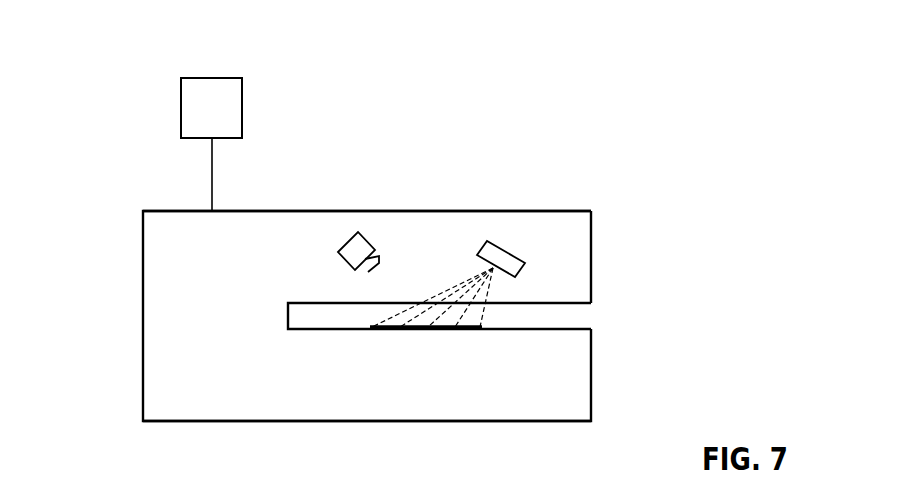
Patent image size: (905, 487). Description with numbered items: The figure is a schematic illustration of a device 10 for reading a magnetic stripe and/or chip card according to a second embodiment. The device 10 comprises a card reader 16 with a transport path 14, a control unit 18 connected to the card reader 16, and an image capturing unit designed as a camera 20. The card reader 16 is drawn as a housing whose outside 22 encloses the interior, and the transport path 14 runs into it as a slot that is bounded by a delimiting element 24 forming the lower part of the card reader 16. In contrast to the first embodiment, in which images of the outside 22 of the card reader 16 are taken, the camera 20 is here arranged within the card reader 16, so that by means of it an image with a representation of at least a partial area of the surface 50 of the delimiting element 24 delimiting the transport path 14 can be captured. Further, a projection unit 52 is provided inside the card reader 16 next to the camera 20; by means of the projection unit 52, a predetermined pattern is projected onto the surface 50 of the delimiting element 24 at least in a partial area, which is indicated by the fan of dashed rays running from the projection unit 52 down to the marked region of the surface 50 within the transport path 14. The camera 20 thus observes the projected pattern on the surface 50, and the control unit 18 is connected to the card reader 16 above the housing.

The device 10 is at (113, 93).
The transport path 14 is at (578, 317).
The card reader 16 is at (162, 347).
The control unit 18 is at (213, 90).
The camera 20 is at (366, 245).
The outside 22 is at (568, 211).
The delimiting element 24 is at (578, 394).
The surface 50 is at (545, 324).
The projection unit 52 is at (492, 250).